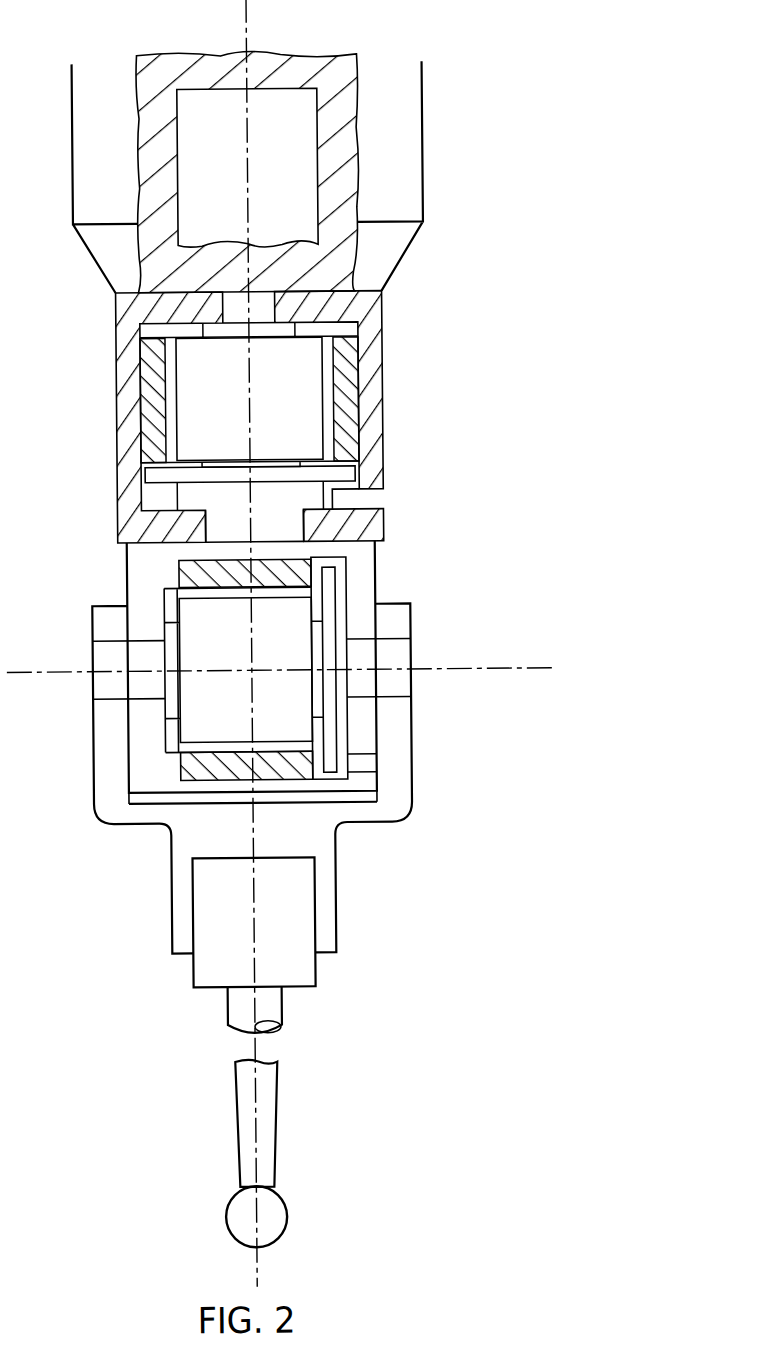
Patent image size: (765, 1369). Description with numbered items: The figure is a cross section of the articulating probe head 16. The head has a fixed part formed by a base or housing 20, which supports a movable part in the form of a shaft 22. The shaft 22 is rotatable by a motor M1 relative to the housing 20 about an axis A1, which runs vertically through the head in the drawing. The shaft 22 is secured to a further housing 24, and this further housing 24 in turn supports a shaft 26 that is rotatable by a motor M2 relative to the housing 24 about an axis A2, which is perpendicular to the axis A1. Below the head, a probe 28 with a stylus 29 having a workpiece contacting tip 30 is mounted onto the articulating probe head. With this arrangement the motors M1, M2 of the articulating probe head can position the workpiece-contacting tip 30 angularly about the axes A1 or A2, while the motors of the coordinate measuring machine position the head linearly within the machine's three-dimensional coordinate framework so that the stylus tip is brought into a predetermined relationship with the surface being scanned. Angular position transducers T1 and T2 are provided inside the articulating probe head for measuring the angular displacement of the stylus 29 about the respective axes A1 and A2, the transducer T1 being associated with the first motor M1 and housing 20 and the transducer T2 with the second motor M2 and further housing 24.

The articulating probe head 16 is at (539, 318).
The housing 20 is at (113, 406).
The shaft 22 is at (218, 532).
The further housing 24 is at (370, 581).
The shaft 26 is at (357, 703).
The probe 28 is at (307, 908).
The stylus 29 is at (265, 1139).
The workpiece contacting tip 30 is at (215, 1220).
The motor M1 is at (303, 401).
The motor M2 is at (197, 720).
The angular position transducer T1 is at (153, 476).
The angular position transducer T2 is at (323, 761).
The axis A1 is at (270, 645).
The axis A2 is at (304, 689).